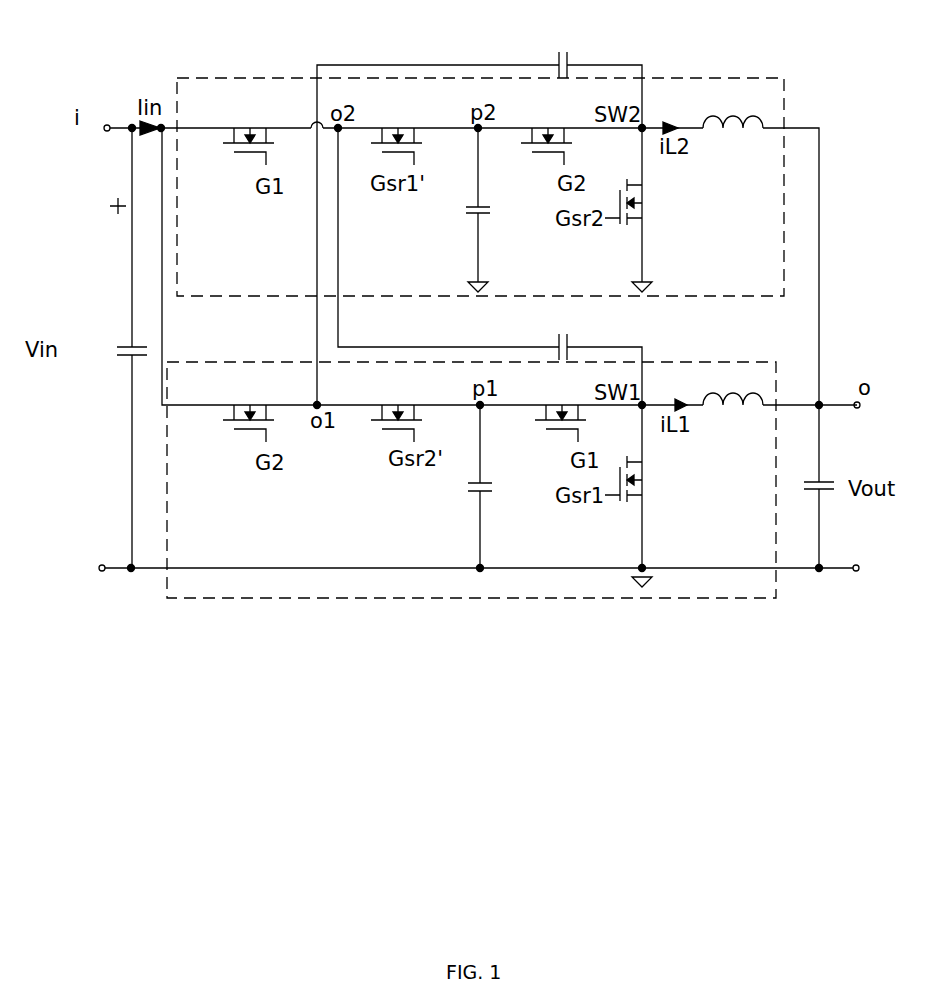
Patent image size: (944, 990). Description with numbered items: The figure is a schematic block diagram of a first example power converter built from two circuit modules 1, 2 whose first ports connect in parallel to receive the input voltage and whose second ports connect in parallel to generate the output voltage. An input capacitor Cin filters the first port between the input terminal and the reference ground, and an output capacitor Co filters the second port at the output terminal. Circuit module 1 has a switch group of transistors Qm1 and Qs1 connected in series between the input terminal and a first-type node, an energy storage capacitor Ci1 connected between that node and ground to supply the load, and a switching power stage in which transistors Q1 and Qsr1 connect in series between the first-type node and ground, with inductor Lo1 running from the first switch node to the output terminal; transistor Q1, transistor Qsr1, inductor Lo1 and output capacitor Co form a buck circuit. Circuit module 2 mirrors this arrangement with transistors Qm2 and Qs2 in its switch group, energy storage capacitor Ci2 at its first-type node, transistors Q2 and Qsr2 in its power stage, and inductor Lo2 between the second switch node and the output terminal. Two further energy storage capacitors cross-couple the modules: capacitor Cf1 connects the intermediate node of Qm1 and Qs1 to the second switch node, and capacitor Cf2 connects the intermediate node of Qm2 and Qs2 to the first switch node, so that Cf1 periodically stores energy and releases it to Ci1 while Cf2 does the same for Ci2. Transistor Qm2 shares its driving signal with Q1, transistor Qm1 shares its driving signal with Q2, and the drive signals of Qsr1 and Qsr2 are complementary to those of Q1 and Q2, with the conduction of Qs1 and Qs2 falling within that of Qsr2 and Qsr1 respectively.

The circuit module 1 is at (776, 598).
The circuit module 2 is at (784, 100).
The input capacitor Cin is at (121, 373).
The energy storage capacitor Cf1 is at (565, 50).
The energy storage capacitor Cf2 is at (565, 334).
The energy storage capacitor Ci1 is at (457, 489).
The energy storage capacitor Ci2 is at (456, 210).
The output capacitor Co is at (805, 489).
The inductor Lo1 is at (733, 384).
The inductor Lo2 is at (733, 107).
The transistor Qm1 is at (250, 406).
The transistor Qm2 is at (249, 130).
The transistor Qs1 is at (396, 407).
The transistor Qs2 is at (396, 130).
The transistor Q1 is at (560, 407).
The transistor Q2 is at (546, 130).
The transistor Qsr1 is at (653, 479).
The transistor Qsr2 is at (653, 202).